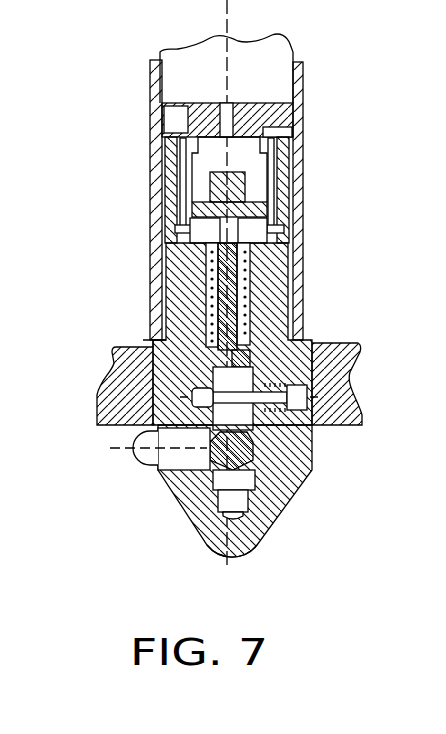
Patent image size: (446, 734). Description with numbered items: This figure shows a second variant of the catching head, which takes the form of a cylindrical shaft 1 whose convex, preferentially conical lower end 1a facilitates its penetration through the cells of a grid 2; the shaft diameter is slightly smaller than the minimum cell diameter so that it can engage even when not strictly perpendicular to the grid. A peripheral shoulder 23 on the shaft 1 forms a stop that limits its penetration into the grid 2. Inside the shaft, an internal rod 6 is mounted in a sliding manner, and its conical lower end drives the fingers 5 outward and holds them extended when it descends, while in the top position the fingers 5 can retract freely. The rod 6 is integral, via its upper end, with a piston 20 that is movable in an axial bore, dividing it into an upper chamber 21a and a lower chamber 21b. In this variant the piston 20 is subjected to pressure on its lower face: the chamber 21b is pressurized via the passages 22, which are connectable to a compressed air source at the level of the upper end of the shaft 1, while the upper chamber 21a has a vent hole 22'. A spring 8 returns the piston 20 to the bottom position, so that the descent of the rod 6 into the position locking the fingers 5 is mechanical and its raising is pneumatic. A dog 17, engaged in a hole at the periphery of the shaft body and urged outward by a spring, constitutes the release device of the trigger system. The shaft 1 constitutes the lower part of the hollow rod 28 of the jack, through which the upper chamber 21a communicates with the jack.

The cylindrical shaft 1 is at (201, 336).
The lower end 1a is at (277, 523).
The grid 2 is at (97, 407).
The fingers 5 is at (147, 455).
The internal rod 6 is at (293, 487).
The spring 8 is at (243, 333).
The dog 17 is at (313, 402).
The piston 20 is at (255, 172).
The upper chamber 21a is at (215, 160).
The chamber 21b is at (205, 230).
The passages 22 is at (176, 120).
The vent hole 22' is at (169, 68).
The peripheral shoulder 23 is at (153, 345).
The rod 28 is at (303, 82).